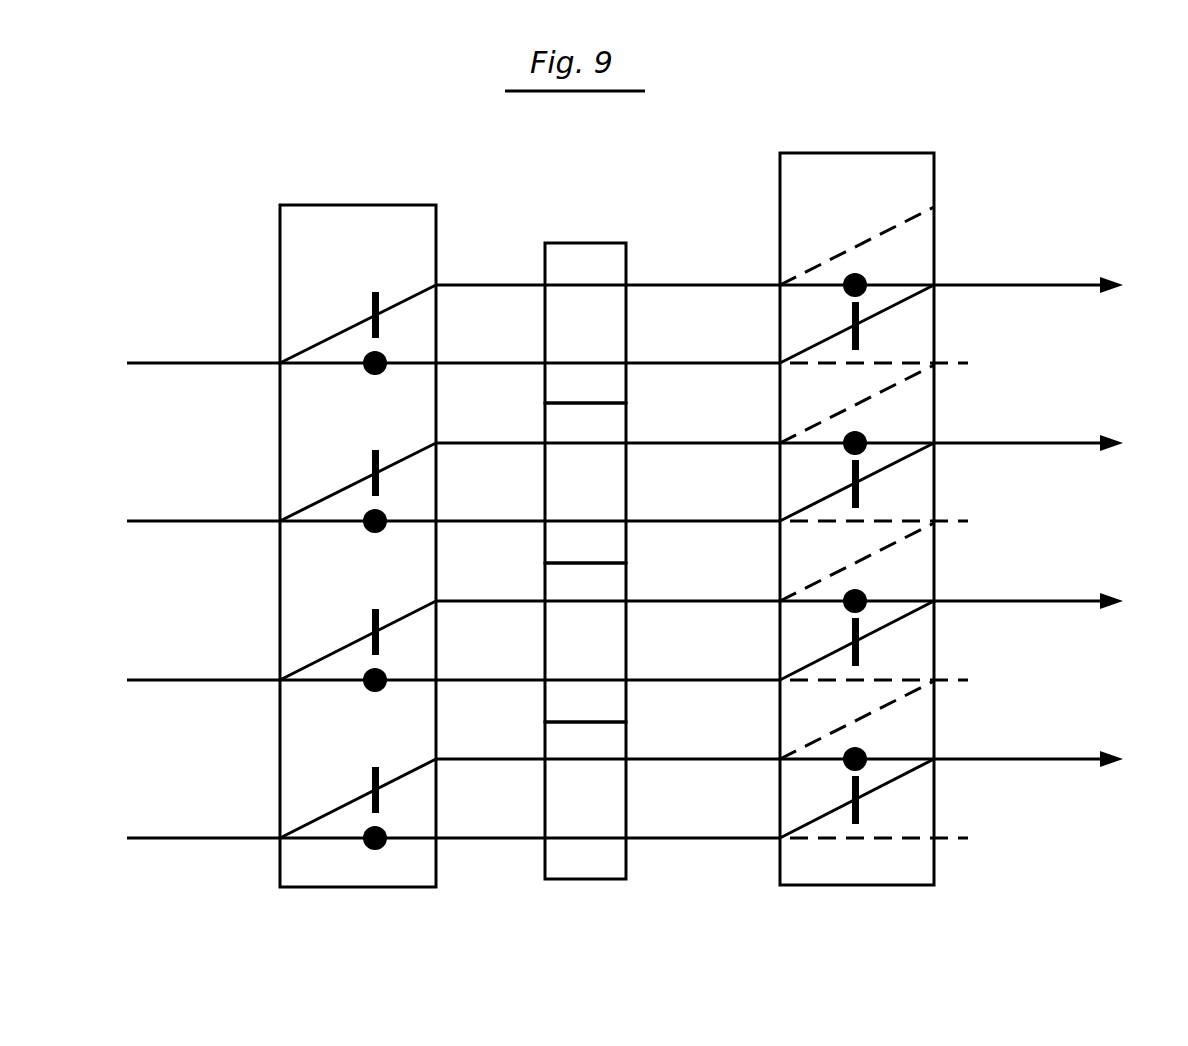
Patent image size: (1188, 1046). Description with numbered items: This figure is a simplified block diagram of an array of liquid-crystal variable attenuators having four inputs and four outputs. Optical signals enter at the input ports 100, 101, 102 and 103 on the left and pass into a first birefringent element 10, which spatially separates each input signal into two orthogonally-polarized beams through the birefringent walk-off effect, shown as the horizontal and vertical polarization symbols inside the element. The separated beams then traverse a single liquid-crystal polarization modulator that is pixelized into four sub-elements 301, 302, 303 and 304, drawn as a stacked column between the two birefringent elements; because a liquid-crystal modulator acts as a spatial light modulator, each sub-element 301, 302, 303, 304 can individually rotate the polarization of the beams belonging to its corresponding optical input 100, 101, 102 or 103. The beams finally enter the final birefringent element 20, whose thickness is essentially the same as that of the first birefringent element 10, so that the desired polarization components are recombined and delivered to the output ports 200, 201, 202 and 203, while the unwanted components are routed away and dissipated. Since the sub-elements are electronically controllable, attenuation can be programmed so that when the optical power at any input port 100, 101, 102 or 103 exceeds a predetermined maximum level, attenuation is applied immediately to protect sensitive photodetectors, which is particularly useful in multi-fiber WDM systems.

The first birefringent element 10 is at (370, 205).
The final birefringent element 20 is at (870, 153).
The input port 100 is at (160, 363).
The input port 101 is at (160, 521).
The input port 102 is at (160, 680).
The input port 103 is at (160, 838).
The output port 200 is at (1065, 285).
The output port 201 is at (1068, 443).
The output port 202 is at (1072, 601).
The output port 203 is at (1070, 759).
The sub-element 301 is at (626, 258).
The sub-element 302 is at (626, 428).
The sub-element 303 is at (626, 657).
The sub-element 304 is at (628, 855).